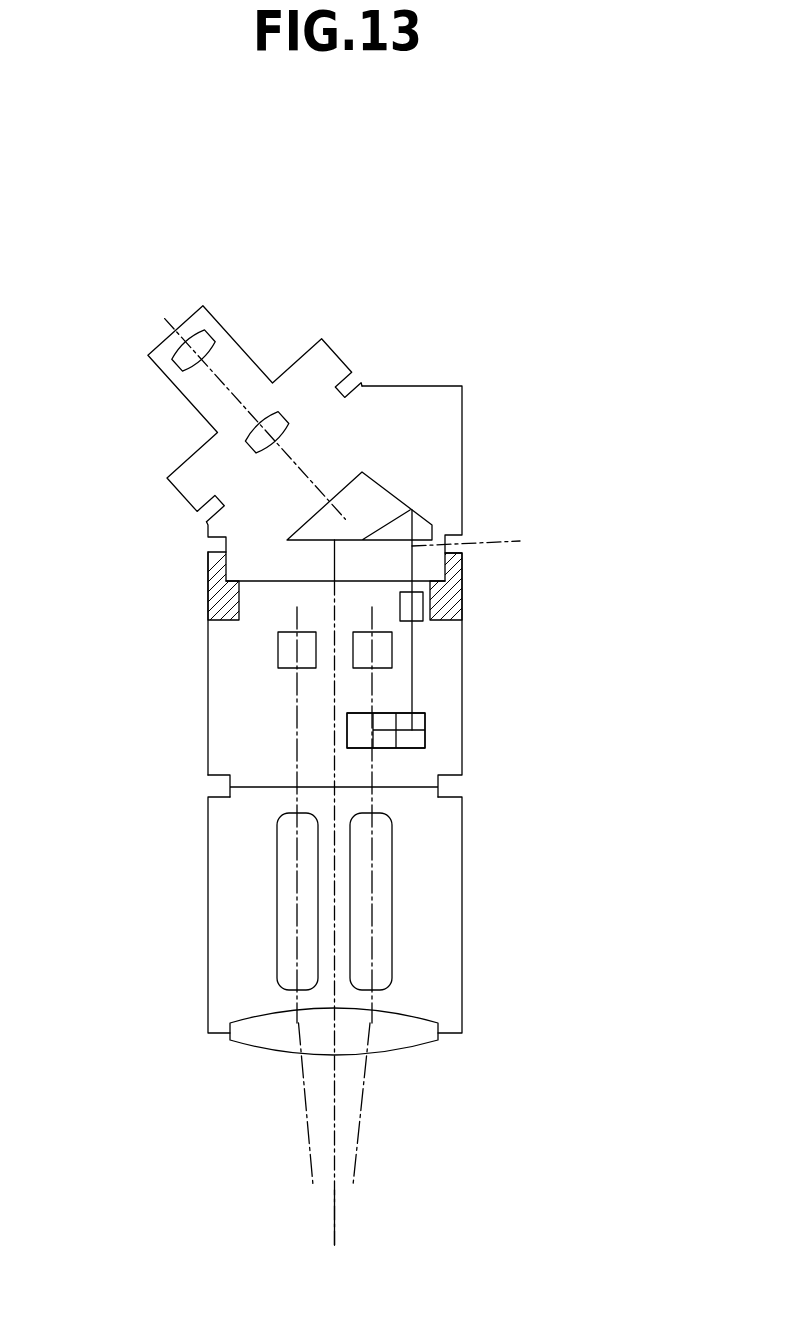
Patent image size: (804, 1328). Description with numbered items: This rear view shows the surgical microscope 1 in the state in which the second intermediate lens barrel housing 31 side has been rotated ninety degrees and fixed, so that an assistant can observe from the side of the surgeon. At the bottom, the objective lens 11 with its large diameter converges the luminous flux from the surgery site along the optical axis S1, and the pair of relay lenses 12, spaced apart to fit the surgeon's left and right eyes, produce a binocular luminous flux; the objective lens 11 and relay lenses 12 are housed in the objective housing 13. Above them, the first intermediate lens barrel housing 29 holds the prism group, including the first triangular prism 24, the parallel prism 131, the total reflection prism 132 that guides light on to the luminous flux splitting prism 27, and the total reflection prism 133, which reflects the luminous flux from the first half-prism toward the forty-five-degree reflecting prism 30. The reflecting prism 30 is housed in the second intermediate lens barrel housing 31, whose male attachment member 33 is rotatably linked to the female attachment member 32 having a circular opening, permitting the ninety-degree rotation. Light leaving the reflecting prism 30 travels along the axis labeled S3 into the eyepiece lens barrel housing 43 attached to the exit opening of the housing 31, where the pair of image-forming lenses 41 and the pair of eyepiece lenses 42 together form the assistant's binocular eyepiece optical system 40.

The surgical microscope 1 is at (513, 266).
The objective lens 11 is at (417, 1048).
The relay lenses 12 is at (393, 917).
The objective housing 13 is at (463, 867).
The first triangular prism 24 is at (277, 653).
The luminous flux splitting prism 27 is at (420, 617).
The first intermediate lens barrel housing 29 is at (207, 645).
The 45° reflecting prism 30 is at (380, 480).
The second intermediate lens barrel housing 31 is at (463, 402).
The female attachment member 32 is at (217, 602).
The male attachment member 33 is at (237, 567).
The assistant's binocular eyepiece optical system 40 is at (268, 363).
The image-forming lenses 41 is at (288, 413).
The eyepiece lenses 42 is at (218, 320).
The eyepiece lens barrel housing 43 is at (177, 465).
The parallel prism 131 is at (425, 730).
The total reflection prism 132 is at (488, 730).
The total reflection prism 133 is at (377, 668).
The optical axis S1 is at (334, 1199).
The optical axis S3 is at (484, 540).